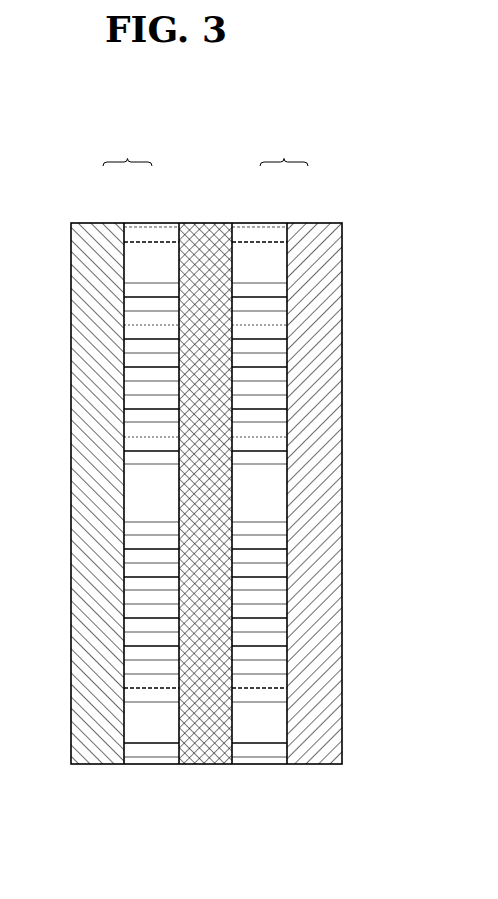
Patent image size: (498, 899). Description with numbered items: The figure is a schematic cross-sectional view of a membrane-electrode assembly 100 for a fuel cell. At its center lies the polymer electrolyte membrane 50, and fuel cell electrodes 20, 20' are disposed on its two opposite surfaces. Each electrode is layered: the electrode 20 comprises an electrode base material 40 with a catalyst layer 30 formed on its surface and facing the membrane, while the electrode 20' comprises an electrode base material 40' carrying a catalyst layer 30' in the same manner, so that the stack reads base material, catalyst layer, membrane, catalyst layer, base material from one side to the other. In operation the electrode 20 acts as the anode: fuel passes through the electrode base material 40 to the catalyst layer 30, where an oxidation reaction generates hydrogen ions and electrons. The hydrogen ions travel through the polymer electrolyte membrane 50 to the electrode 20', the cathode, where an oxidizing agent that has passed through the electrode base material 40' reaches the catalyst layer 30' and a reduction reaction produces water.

The membrane-electrode assembly 100 is at (222, 110).
The fuel cell electrode 20 is at (127, 152).
The fuel cell electrode 20' is at (284, 152).
The catalyst layer 30 is at (151, 469).
The catalyst layer 30' is at (259, 469).
The electrode base material 40 is at (97, 469).
The electrode base material 40' is at (314, 469).
The polymer electrolyte membrane 50 is at (203, 233).